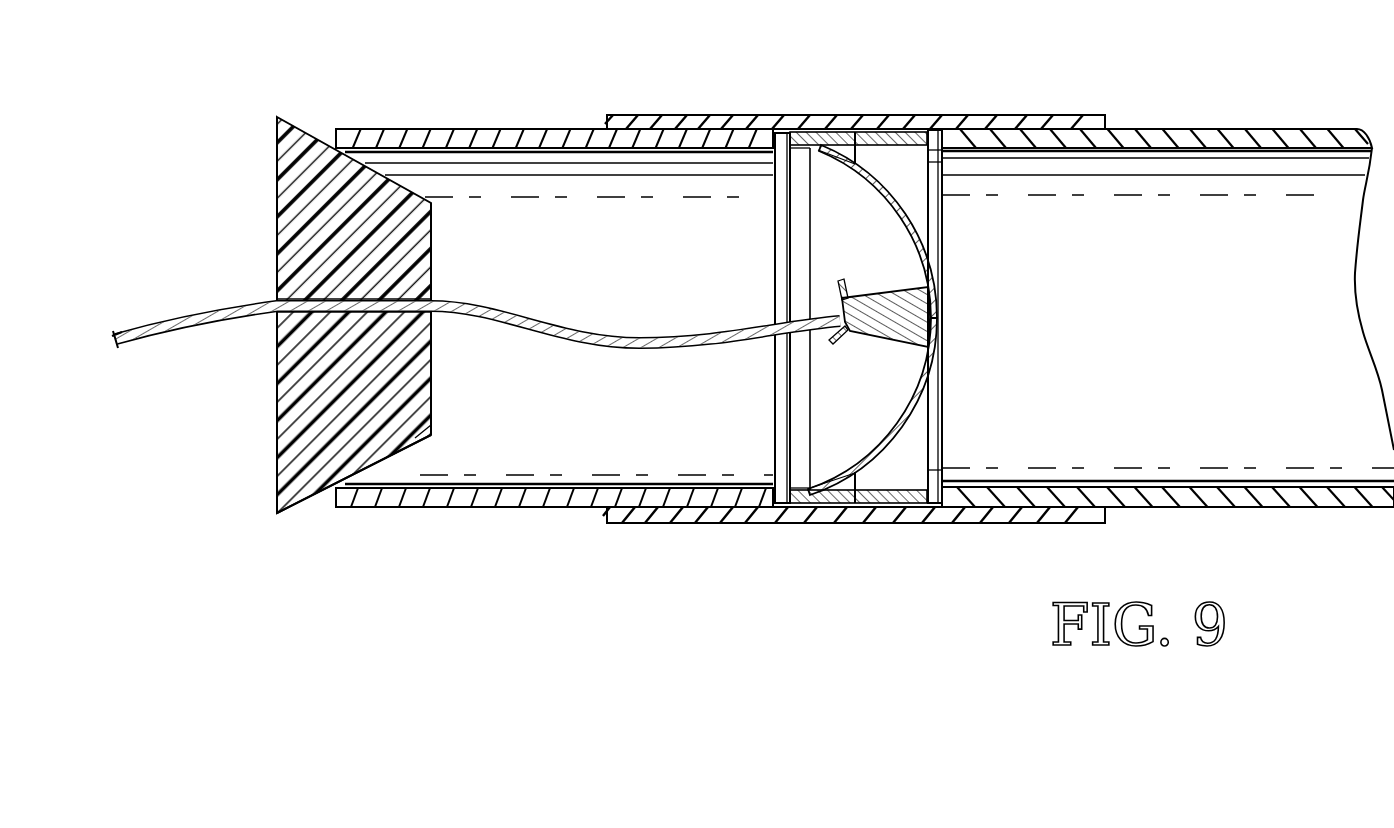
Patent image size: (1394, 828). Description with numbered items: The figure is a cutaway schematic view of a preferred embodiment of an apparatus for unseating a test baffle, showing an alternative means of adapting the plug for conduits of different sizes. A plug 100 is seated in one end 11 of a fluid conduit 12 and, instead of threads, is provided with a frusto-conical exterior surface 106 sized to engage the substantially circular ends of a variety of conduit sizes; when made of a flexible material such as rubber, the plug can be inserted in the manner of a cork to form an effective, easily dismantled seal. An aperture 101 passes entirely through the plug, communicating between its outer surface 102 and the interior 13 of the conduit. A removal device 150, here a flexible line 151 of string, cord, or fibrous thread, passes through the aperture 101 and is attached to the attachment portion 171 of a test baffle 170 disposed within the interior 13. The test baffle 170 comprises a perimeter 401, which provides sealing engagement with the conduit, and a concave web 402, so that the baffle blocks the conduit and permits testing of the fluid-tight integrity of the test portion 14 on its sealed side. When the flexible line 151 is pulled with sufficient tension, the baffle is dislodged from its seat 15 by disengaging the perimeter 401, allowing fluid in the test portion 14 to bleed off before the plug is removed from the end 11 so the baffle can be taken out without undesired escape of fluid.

The end of fluid conduit 11 is at (462, 125).
The fluid conduit 12 is at (572, 126).
The interior of fluid conduit 13 is at (686, 263).
The test portion of conduit 14 is at (1188, 310).
The seat 15 is at (796, 484).
The plug 100 is at (274, 179).
The aperture 101 is at (325, 301).
The outer surface of plug 102 is at (273, 451).
The frusto-conical exterior surface 106 is at (311, 498).
The removal device 150 is at (198, 326).
The flexible line 151 is at (575, 344).
The test baffle 170 is at (877, 182).
The attachment portion 171 is at (871, 337).
The perimeter 401 is at (829, 502).
The web 402 is at (894, 438).